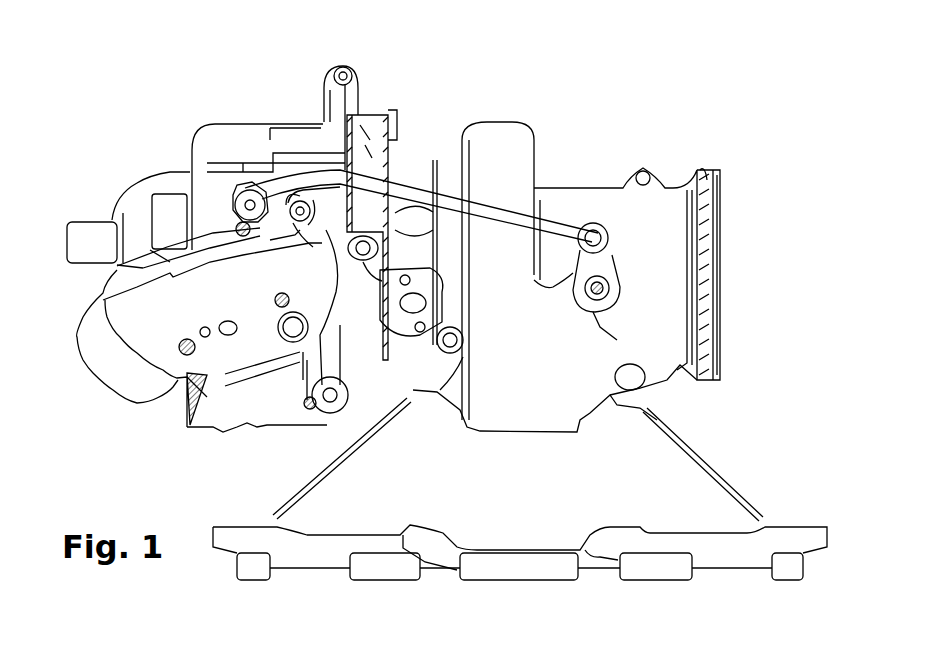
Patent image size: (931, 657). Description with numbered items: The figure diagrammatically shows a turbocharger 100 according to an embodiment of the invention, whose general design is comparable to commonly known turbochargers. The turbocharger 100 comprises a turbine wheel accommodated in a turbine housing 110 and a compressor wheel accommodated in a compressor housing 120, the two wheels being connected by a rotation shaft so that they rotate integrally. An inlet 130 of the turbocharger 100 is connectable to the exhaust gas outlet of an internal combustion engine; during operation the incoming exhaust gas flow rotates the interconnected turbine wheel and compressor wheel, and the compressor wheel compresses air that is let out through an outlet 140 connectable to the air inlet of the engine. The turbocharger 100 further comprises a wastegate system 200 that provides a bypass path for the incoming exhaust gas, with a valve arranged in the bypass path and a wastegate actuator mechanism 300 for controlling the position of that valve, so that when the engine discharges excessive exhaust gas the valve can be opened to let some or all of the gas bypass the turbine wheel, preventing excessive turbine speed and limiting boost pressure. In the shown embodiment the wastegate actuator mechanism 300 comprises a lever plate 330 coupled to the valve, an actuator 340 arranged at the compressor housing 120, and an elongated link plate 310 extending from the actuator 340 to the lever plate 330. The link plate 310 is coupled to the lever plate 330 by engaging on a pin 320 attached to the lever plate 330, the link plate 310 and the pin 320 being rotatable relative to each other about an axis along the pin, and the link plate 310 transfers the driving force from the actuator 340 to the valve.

The turbocharger 100 is at (210, 78).
The turbine housing 110 is at (655, 320).
The compressor housing 120 is at (272, 140).
The inlet 130 is at (520, 440).
The outlet 140 is at (90, 380).
The wastegate system 200 is at (650, 258).
The wastegate actuator mechanism 300 is at (557, 160).
The link plate 310 is at (447, 203).
The pin 320 is at (594, 236).
The lever plate 330 is at (597, 267).
The actuator 340 is at (220, 200).